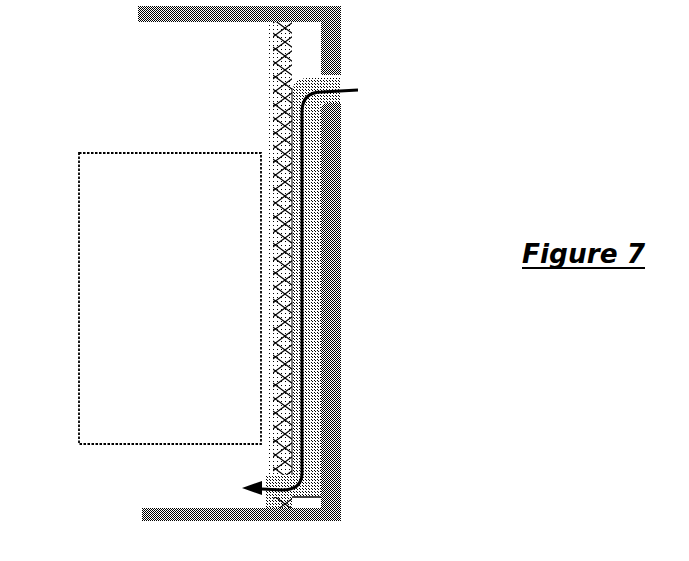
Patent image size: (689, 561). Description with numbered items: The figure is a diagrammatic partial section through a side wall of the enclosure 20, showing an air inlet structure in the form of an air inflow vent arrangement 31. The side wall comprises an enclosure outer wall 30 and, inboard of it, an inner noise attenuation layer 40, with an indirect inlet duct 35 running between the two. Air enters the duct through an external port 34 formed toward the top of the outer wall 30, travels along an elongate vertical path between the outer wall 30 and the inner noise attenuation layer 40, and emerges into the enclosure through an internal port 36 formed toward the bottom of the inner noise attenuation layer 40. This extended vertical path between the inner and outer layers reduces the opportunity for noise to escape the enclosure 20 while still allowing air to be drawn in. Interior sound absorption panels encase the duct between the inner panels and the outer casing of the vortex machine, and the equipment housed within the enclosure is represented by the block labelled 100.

The enclosure 20 is at (362, 391).
The enclosure outer wall 30 is at (333, 213).
The air inflow vent arrangement 31 is at (250, 128).
The external port 34 is at (333, 90).
The indirect inlet duct 35 is at (310, 172).
The internal port 36 is at (278, 483).
The inner noise attenuation layer 40 is at (280, 52).
The equipment 100 is at (170, 298).